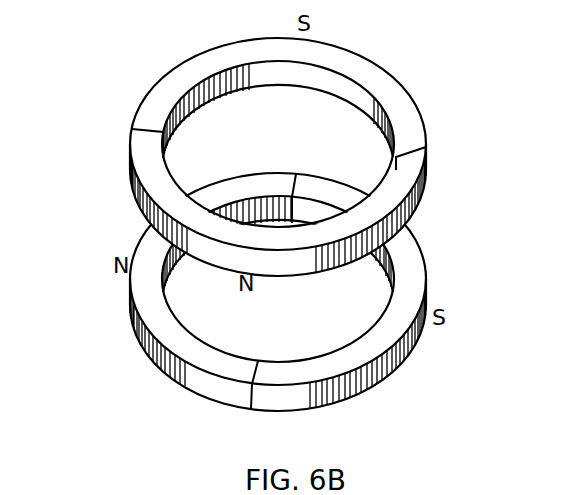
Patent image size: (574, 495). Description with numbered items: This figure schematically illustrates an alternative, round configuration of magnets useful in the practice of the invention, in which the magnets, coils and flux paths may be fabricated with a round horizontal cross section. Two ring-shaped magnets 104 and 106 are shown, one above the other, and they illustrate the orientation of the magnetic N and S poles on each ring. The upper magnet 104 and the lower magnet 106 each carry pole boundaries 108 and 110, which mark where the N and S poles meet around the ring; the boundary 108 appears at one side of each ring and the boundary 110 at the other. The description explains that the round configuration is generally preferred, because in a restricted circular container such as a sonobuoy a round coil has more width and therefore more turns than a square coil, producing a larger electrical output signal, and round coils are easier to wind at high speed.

The magnet 104 is at (364, 70).
The magnet 106 is at (383, 338).
The pole boundary 108 is at (148, 133).
The pole boundary 110 is at (417, 149).